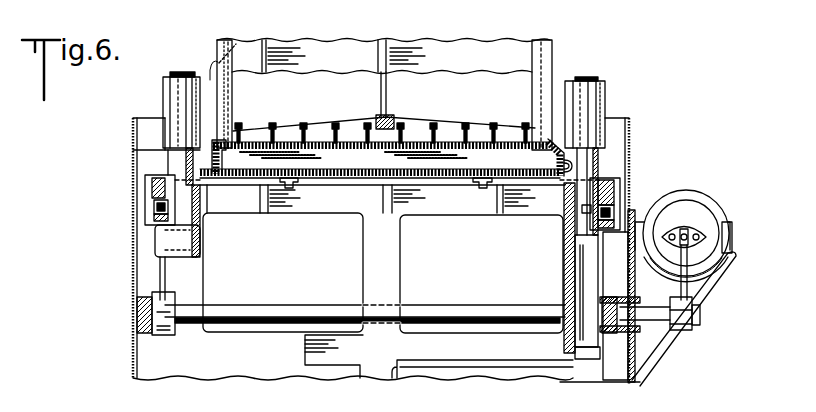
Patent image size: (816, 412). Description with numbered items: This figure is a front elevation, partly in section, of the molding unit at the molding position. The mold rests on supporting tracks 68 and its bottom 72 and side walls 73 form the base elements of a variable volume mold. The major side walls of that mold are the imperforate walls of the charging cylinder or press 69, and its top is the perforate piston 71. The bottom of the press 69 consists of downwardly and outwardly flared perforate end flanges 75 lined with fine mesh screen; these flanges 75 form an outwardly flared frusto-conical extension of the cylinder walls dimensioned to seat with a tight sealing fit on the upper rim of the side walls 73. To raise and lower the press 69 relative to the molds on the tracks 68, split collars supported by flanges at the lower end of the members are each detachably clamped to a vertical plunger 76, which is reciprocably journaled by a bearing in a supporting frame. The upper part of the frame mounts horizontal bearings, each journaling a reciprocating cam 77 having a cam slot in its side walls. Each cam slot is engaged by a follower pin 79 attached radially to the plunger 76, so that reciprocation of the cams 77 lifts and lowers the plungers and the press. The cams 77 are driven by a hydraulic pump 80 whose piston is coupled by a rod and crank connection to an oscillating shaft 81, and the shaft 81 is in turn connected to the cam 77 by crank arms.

The supporting tracks 68 is at (308, 186).
The press 69 is at (552, 52).
The perforate piston 71 is at (318, 140).
The bottom 72 is at (345, 180).
The side walls 73 is at (568, 168).
The perforate end flanges 75 is at (217, 147).
The vertical plunger 76 is at (586, 78).
The reciprocating cam 77 is at (160, 185).
The follower pin 79 is at (160, 207).
The hydraulic pump 80 is at (682, 211).
The oscillating shaft 81 is at (700, 310).